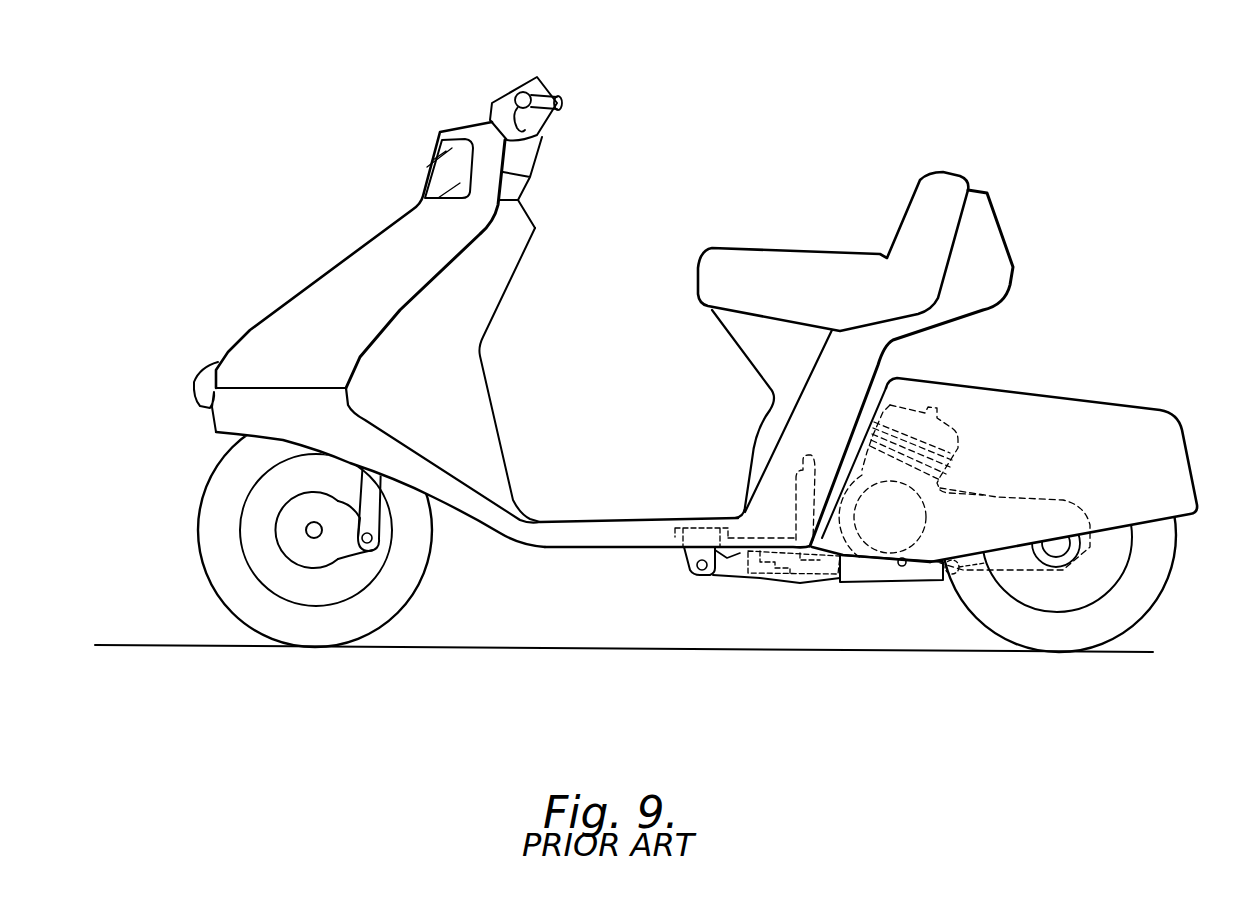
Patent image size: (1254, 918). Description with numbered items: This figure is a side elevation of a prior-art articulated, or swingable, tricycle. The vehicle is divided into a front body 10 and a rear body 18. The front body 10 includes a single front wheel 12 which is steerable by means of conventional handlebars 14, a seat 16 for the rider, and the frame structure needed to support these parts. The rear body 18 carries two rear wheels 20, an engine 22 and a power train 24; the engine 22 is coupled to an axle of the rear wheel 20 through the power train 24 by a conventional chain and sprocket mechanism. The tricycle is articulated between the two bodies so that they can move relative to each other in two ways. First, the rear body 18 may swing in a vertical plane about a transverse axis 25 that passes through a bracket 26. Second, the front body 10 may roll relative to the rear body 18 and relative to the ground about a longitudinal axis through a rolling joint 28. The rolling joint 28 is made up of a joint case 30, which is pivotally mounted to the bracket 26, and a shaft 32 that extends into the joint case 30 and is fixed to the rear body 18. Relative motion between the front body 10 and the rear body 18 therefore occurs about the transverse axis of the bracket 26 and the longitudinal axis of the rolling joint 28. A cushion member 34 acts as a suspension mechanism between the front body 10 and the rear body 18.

The front body 10 is at (595, 532).
The front wheel 12 is at (197, 543).
The handlebars 14 is at (562, 95).
The seat 16 is at (815, 210).
The rear body 18 is at (1140, 403).
The rear wheels 20 is at (1094, 633).
The engine 22 is at (957, 423).
The power train 24 is at (1010, 497).
The transverse axis 25 is at (711, 550).
The bracket 26 is at (692, 553).
The rolling joint 28 is at (800, 602).
The joint case 30 is at (820, 582).
The shaft 32 is at (867, 583).
The cushion member 34 is at (793, 503).